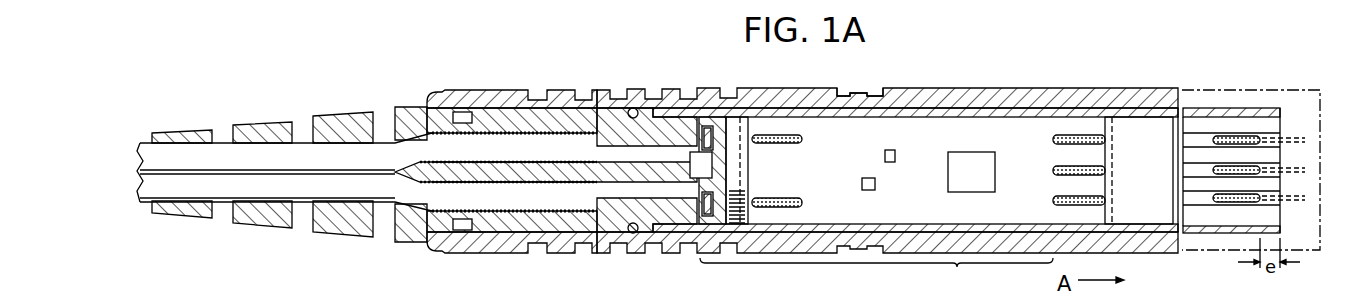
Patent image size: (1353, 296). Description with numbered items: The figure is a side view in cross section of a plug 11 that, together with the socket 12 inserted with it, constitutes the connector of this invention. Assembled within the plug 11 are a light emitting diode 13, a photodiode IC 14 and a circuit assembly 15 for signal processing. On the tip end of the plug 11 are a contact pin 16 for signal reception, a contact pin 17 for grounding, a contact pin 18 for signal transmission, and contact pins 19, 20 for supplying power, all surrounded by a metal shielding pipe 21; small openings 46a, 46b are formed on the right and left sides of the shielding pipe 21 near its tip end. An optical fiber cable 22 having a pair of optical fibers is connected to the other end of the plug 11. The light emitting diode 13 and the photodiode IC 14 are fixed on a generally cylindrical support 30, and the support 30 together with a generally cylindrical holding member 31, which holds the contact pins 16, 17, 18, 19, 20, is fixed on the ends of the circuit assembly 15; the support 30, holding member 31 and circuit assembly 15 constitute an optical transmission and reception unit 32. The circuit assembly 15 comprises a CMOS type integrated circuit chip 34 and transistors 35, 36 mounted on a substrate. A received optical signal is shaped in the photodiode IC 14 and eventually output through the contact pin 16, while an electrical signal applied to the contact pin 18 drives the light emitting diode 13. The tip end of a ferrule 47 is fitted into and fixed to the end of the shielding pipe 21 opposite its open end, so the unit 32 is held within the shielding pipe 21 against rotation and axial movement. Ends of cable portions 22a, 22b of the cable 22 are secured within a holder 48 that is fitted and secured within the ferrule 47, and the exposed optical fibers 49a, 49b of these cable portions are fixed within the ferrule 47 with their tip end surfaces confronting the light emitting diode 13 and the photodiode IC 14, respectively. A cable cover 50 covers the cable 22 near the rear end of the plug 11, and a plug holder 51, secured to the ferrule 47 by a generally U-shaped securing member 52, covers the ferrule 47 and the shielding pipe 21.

The plug 11 is at (1082, 75).
The socket 12 is at (1310, 250).
The light emitting diode 13 is at (700, 195).
The photodiode IC 14 is at (706, 128).
The circuit assembly 15 is at (925, 125).
The contact pin 16 is at (1192, 135).
The contact pin 17 is at (1178, 170).
The contact pin 18 is at (1178, 200).
The contact pin 19 is at (1203, 150).
The contact pin 20 is at (1195, 192).
The shielding pipe 21 is at (1275, 108).
The optical fiber cable 22 is at (220, 203).
The cable portion 22a is at (477, 212).
The cable portion 22b is at (501, 140).
The support 30 is at (736, 125).
The holding member 31 is at (1142, 122).
The optical transmission and reception unit 32 is at (876, 276).
The CMOS type integrated circuit chip 34 is at (947, 165).
The transistor 35 is at (861, 185).
The transistor 36 is at (884, 155).
The small opening 46a is at (1250, 234).
The small opening 46b is at (1250, 108).
The ferrule 47 is at (678, 122).
The holder 48 is at (478, 110).
The optical fiber 49a is at (655, 208).
The optical fiber 49b is at (656, 145).
The cable cover 50 is at (362, 237).
The plug holder 51 is at (851, 91).
The securing member 52 is at (632, 108).